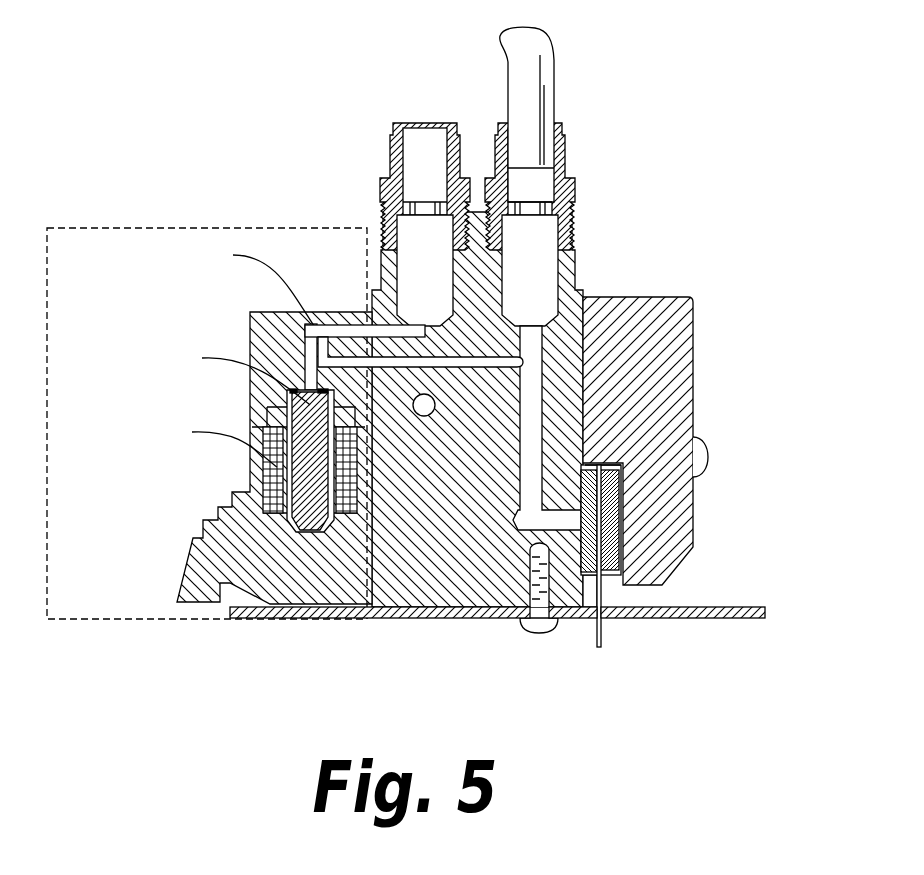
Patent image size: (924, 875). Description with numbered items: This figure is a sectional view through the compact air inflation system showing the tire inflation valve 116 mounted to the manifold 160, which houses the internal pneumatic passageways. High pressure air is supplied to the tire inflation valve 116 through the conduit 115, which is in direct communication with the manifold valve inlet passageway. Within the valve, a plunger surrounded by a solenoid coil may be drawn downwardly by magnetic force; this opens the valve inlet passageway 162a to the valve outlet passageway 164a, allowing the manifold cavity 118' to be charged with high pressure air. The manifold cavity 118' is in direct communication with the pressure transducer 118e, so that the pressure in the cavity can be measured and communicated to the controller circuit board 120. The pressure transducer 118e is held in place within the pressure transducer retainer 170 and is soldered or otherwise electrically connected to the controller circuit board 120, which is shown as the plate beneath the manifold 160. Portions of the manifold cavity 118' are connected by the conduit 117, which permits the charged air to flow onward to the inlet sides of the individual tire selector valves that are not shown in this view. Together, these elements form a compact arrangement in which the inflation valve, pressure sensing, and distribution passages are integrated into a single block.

The conduit 115 is at (423, 147).
The conduit 117 is at (525, 107).
The tire inflation valve 116 is at (132, 619).
The valve inlet passageway 162a is at (387, 333).
The valve outlet passageway 164a is at (480, 360).
The manifold cavity 118' is at (643, 428).
The pressure transducer 118e is at (607, 522).
The pressure transducer retainer 170 is at (627, 420).
The manifold 160 is at (460, 537).
The controller circuit board 120 is at (667, 618).